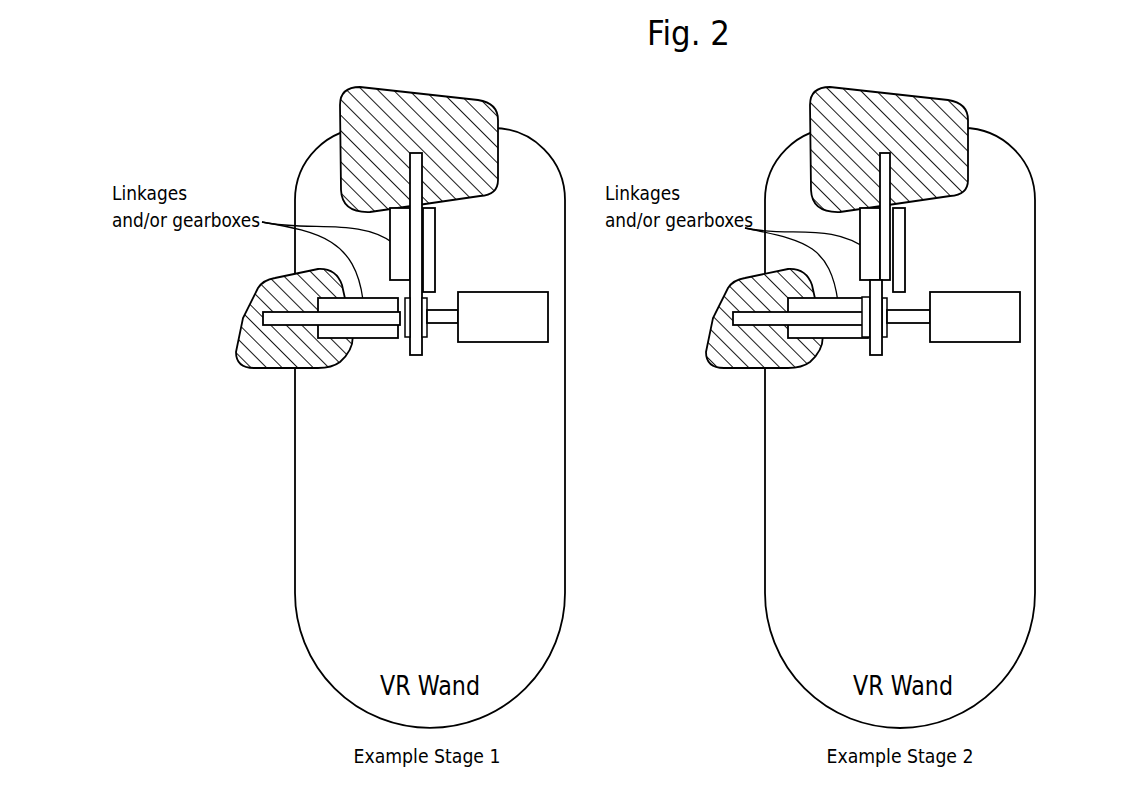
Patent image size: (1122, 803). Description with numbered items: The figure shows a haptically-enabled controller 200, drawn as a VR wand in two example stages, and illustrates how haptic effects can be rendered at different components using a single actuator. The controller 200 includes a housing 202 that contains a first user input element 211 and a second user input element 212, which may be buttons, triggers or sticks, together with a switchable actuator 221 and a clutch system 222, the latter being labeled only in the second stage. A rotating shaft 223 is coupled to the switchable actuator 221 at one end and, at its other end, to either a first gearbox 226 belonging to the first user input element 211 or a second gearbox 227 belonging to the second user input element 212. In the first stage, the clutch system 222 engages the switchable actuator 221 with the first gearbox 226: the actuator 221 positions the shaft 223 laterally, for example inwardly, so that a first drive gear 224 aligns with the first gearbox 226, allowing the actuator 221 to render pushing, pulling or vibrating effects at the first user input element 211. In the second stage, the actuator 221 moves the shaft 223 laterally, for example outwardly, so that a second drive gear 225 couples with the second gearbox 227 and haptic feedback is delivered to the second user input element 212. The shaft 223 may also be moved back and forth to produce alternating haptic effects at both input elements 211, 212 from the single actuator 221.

The haptically-enabled controller 200 is at (684, 83).
The housing 202 is at (566, 503).
The first user input element 211 is at (498, 110).
The second user input element 212 is at (240, 362).
The switchable actuator 221 is at (739, 316).
The clutch system 222 is at (880, 346).
The rotating shaft 223 is at (437, 305).
The first drive gear 224 is at (415, 356).
The second drive gear 225 is at (866, 317).
The first gearbox 226 is at (437, 258).
The second gearbox 227 is at (828, 340).